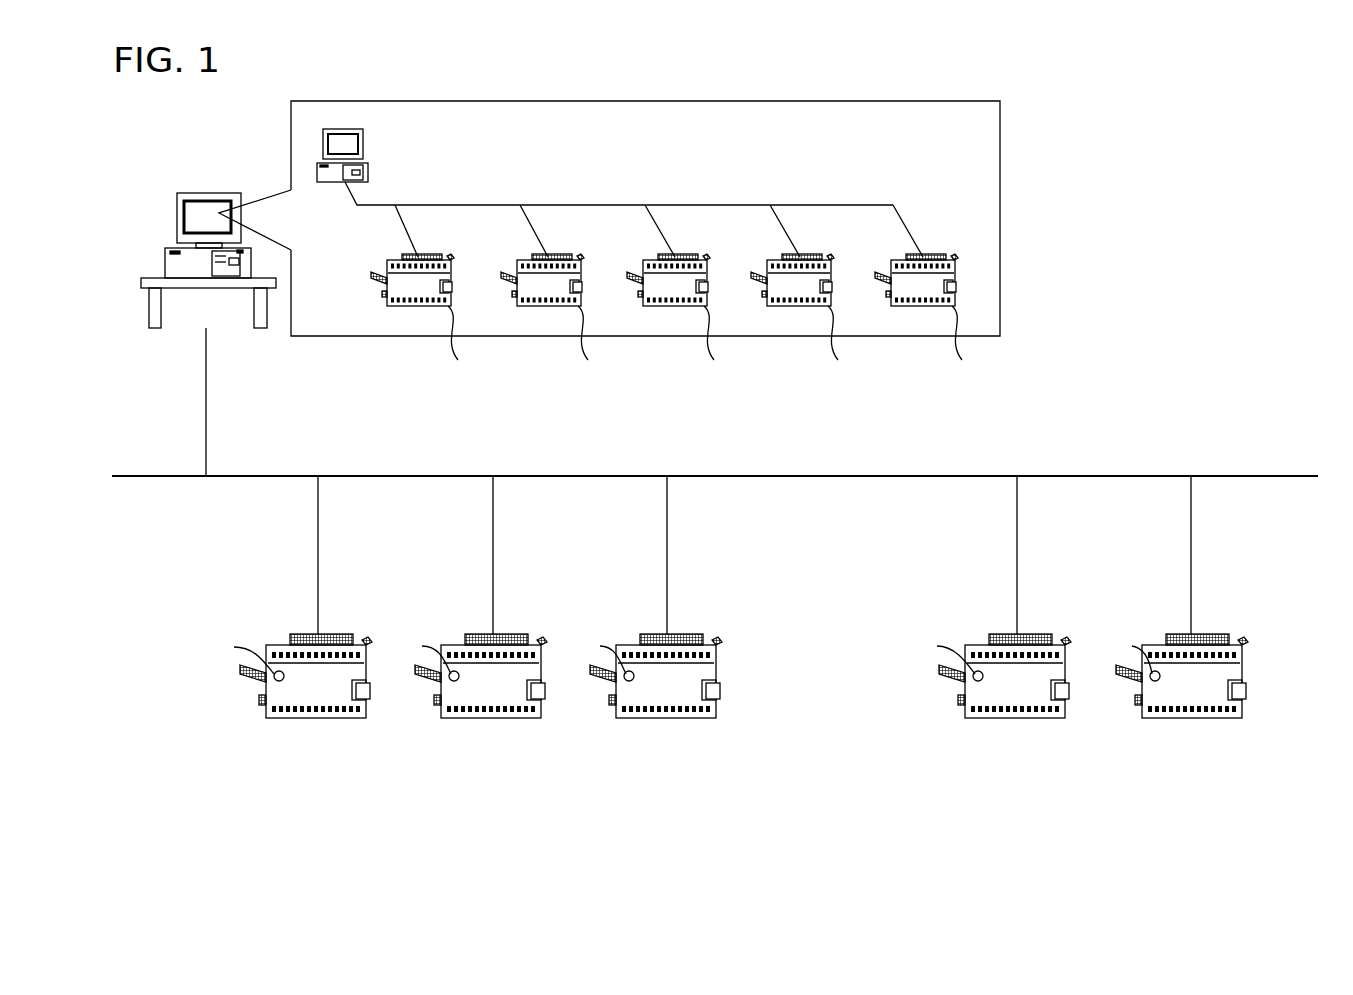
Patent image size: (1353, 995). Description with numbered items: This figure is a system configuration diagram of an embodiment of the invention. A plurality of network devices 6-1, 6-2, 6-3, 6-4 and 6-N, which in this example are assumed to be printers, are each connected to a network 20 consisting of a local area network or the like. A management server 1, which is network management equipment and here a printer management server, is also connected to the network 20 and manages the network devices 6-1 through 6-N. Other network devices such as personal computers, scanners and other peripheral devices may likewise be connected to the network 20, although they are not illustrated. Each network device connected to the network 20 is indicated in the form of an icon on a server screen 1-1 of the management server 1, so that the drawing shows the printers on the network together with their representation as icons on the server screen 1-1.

The management server 1 is at (217, 178).
The server screen 1-1 is at (895, 125).
The network 20 is at (1268, 476).
The network device 6-1 is at (318, 745).
The network device 6-2 is at (493, 745).
The network device 6-3 is at (668, 745).
The network device 6-4 is at (1017, 745).
The network device 6-N is at (1194, 745).